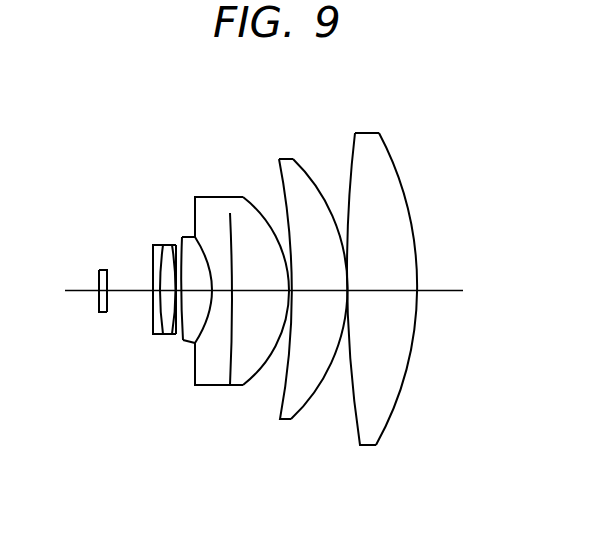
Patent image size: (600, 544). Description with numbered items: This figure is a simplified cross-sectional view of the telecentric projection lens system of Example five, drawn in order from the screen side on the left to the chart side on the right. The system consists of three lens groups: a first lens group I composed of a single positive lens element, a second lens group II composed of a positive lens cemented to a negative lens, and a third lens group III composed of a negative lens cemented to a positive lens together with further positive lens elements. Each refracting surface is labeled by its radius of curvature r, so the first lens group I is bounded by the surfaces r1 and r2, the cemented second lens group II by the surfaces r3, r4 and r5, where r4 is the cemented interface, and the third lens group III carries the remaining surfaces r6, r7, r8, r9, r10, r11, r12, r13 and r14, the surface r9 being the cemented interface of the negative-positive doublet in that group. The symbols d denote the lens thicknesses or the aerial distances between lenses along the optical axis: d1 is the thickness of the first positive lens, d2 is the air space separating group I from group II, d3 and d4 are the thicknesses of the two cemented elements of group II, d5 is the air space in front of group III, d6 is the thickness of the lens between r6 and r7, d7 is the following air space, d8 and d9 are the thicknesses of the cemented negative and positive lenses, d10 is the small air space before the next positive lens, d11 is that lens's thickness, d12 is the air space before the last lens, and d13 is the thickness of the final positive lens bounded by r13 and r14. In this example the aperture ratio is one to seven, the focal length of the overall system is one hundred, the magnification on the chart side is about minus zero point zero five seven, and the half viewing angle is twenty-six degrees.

The first lens surface r1 is at (98, 268).
The second lens surface r2 is at (107, 270).
The third lens surface r3 is at (153, 258).
The fourth lens surface r4 is at (173, 247).
The fifth lens surface r5 is at (176, 247).
The sixth lens surface r6 is at (183, 237).
The seventh lens surface r7 is at (198, 245).
The eighth lens surface r8 is at (230, 213).
The ninth lens surface r9 is at (230, 213).
The tenth lens surface r10 is at (281, 183).
The eleventh lens surface r11 is at (303, 167).
The twelfth lens surface r12 is at (353, 152).
The thirteenth lens surface r13 is at (379, 133).
The fourteenth lens surface r14 is at (386, 150).
The first lens thickness d1 is at (98, 312).
The first aerial distance d2 is at (123, 292).
The second-group positive lens thickness d3 is at (152, 305).
The second-group negative lens thickness d4 is at (167, 334).
The second aerial distance d5 is at (178, 330).
The third-group first lens thickness d6 is at (196, 343).
The third aerial distance d7 is at (213, 300).
The cemented negative lens thickness d8 is at (233, 292).
The cemented positive lens thickness d9 is at (258, 292).
The fourth aerial distance d10 is at (301, 292).
The positive lens thickness d11 is at (317, 292).
The fifth aerial distance d12 is at (350, 292).
The last lens thickness d13 is at (393, 292).
The first lens group I is at (67, 491).
The second lens group II is at (175, 491).
The third lens group III is at (505, 491).